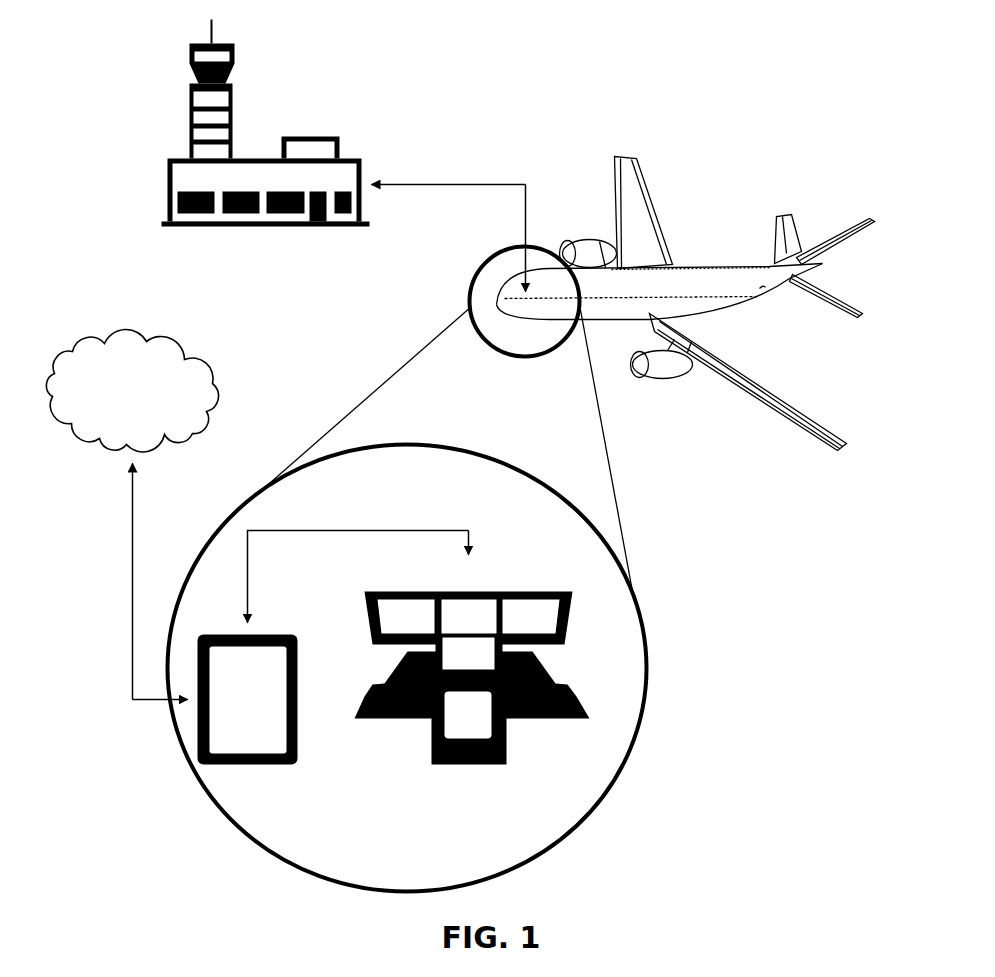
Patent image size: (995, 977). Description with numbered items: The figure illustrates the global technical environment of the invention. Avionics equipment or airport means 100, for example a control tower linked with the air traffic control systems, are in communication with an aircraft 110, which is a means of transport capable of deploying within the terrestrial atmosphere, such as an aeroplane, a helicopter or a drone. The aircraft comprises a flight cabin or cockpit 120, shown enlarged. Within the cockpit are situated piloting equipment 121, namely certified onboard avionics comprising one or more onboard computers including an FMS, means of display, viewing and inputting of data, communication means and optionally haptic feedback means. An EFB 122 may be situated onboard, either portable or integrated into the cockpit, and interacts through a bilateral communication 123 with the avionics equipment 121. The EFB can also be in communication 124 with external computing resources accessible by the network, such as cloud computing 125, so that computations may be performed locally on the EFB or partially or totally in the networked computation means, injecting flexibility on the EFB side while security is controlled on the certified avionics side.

The avionics equipment or airport means 100 is at (247, 40).
The aircraft 110 is at (653, 162).
The cockpit 120 is at (488, 262).
The piloting equipment 121 is at (522, 580).
The EFB 122 is at (272, 620).
The bilateral communication 123 is at (352, 522).
The communication 124 is at (133, 570).
The cloud computing 125 is at (157, 332).